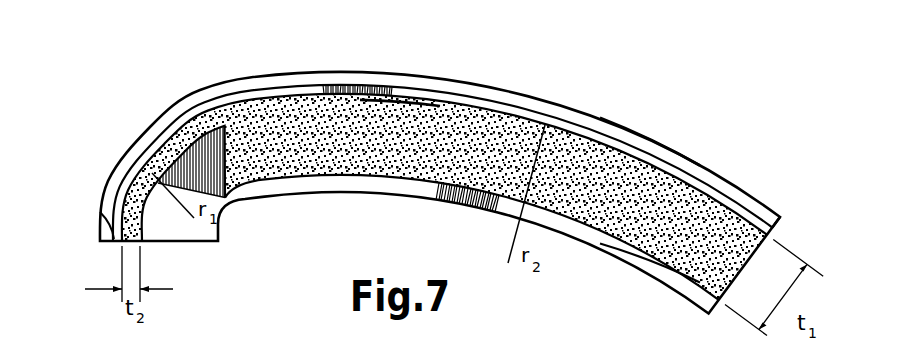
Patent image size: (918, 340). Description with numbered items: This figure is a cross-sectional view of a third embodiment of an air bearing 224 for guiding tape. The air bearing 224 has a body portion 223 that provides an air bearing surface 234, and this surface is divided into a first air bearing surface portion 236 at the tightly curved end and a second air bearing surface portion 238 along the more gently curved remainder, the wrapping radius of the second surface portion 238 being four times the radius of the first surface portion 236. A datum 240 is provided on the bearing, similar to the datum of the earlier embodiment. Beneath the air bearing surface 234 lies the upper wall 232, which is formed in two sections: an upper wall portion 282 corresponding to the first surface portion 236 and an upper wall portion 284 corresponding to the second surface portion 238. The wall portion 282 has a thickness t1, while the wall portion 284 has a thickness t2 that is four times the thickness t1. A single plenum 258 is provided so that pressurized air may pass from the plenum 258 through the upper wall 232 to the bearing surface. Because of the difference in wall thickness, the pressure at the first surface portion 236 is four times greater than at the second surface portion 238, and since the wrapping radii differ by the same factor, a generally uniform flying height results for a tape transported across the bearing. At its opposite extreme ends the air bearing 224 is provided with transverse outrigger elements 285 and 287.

The body portion 223 is at (330, 160).
The air bearing 224 is at (604, 70).
The upper wall 232 is at (318, 100).
The air bearing surface 234 is at (415, 97).
The first air bearing surface portion 236 is at (160, 132).
The second air bearing surface portion 238 is at (633, 137).
The datum 240 is at (220, 88).
The plenum 258 is at (267, 178).
The upper wall portion 282 is at (192, 115).
The upper wall portion 284 is at (640, 243).
The transverse outrigger element 285 is at (112, 230).
The transverse outrigger element 287 is at (774, 218).